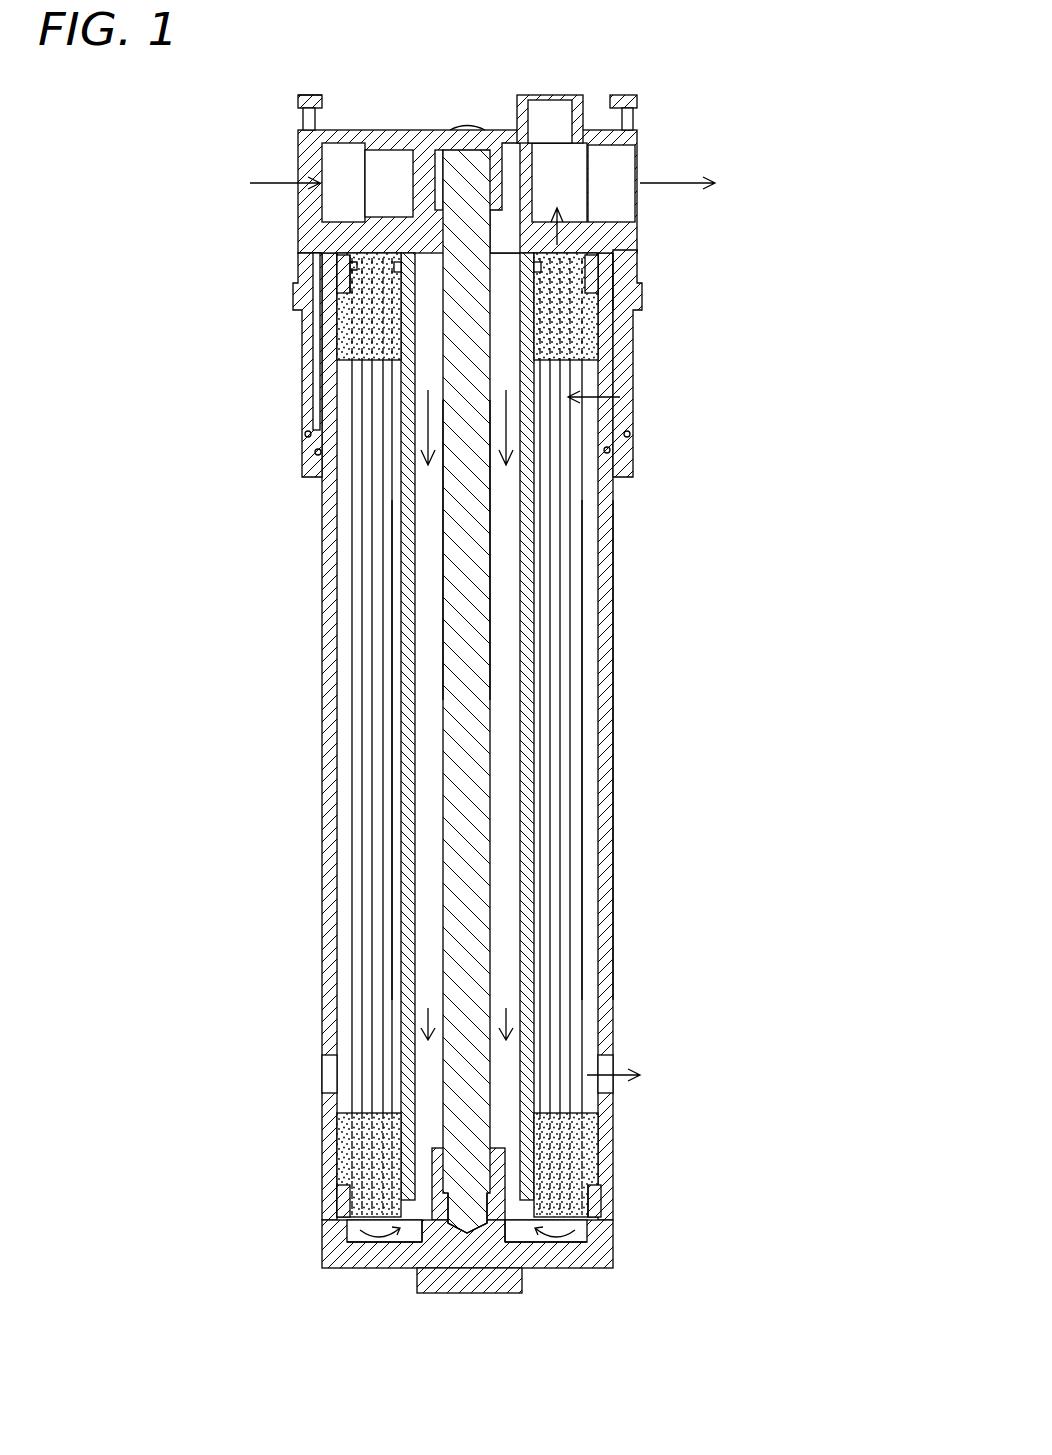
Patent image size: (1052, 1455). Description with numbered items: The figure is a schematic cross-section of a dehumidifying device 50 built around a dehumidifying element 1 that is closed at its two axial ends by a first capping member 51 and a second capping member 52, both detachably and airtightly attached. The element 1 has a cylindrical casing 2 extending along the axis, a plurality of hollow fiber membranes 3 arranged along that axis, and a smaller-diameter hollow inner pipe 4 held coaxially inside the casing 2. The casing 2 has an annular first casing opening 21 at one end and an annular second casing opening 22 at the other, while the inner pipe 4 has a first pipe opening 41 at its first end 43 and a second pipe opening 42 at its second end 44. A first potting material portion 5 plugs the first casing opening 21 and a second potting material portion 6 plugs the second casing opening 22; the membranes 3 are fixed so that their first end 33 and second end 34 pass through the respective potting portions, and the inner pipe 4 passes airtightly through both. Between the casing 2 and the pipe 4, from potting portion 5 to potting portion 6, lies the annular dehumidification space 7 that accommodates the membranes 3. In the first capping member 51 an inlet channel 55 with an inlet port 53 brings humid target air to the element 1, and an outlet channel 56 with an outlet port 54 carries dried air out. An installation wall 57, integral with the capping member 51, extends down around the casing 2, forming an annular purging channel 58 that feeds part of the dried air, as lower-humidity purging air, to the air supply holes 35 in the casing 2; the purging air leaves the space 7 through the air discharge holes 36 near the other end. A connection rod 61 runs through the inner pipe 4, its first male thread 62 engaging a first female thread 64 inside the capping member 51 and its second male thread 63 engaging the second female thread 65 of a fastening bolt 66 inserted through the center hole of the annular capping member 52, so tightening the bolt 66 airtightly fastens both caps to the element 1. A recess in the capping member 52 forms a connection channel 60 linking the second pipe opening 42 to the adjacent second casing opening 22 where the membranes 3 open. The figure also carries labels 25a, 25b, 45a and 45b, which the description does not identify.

The dehumidifying element 1 is at (638, 558).
The cylindrical casing 2 is at (612, 705).
The hollow fiber membranes 3 is at (370, 705).
The hollow inner pipe 4 is at (405, 940).
The first potting material portion 5 is at (588, 320).
The second potting material portion 6 is at (587, 1122).
The dehumidification space 7 is at (606, 806).
The first casing opening 21 is at (467, 162).
The second casing opening 22 is at (370, 1227).
The upper seal member 25a is at (345, 280).
The lower seal member 25b is at (337, 1218).
The first end of the hollow fiber membranes 33 is at (632, 292).
The second end of the hollow fiber membranes 34 is at (587, 1157).
The air supply holes 35 is at (318, 405).
The air discharge holes 36 is at (332, 1080).
The first pipe opening 41 is at (403, 255).
The second pipe opening 42 is at (420, 1250).
The first end of the inner pipe 43 is at (512, 240).
The second end of the inner pipe 44 is at (535, 1222).
The upper opening 45a is at (380, 270).
The lower opening 45b is at (395, 1226).
The dehumidifying device 50 is at (698, 77).
The first capping member 51 is at (289, 111).
The second capping member 52 is at (504, 1277).
The inlet port 53 is at (340, 207).
The outlet port 54 is at (605, 165).
The inlet channel 55 is at (405, 243).
The outlet channel 56 is at (560, 187).
The installation wall 57 is at (305, 385).
The purging channel 58 is at (618, 363).
The connection channel 60 is at (573, 1230).
The connection rod 61 is at (470, 578).
The first male thread 62 is at (467, 180).
The second male thread 63 is at (465, 1165).
The first female thread 64 is at (432, 175).
The second female thread 65 is at (498, 1178).
The fastening bolt 66 is at (507, 1280).